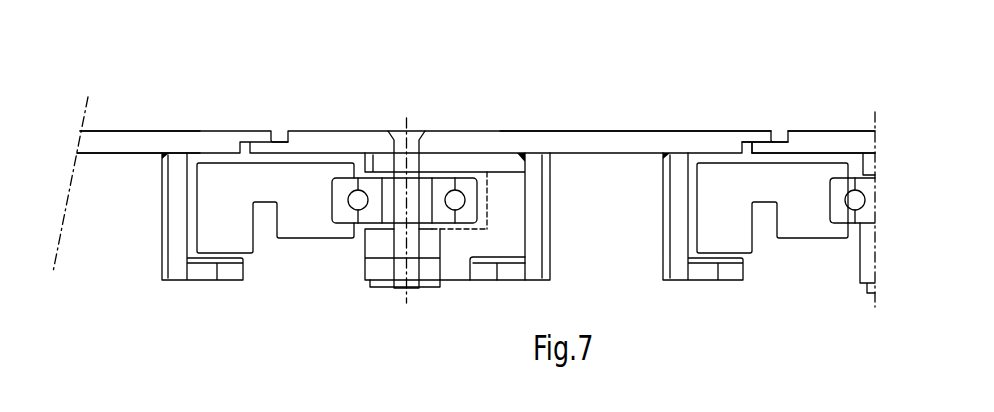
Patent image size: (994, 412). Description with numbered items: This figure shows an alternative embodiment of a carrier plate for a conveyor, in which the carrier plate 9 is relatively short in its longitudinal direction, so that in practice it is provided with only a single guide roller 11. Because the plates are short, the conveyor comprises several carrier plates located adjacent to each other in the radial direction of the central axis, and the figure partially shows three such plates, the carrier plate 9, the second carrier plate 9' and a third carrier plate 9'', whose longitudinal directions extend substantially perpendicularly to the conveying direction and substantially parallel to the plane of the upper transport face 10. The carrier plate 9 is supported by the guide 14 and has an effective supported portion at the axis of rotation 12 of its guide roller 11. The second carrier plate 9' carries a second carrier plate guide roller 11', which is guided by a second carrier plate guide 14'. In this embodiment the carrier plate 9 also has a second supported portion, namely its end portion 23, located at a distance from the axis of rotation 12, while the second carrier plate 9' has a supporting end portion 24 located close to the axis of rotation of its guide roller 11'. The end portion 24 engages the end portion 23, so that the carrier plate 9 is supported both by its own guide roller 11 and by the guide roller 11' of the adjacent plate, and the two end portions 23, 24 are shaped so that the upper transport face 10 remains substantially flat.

The carrier plate 9 is at (635, 86).
The second carrier plate 9' is at (815, 167).
The third carrier plate 9'' is at (138, 97).
The upper transport face 10 is at (491, 131).
The guide roller 11 is at (404, 132).
The second carrier plate guide roller 11' is at (851, 132).
The axis of rotation 12 is at (408, 128).
The guide 14 is at (275, 147).
The second carrier plate guide 14' is at (772, 147).
The end portion 23 is at (757, 135).
The end portion 24 is at (771, 146).